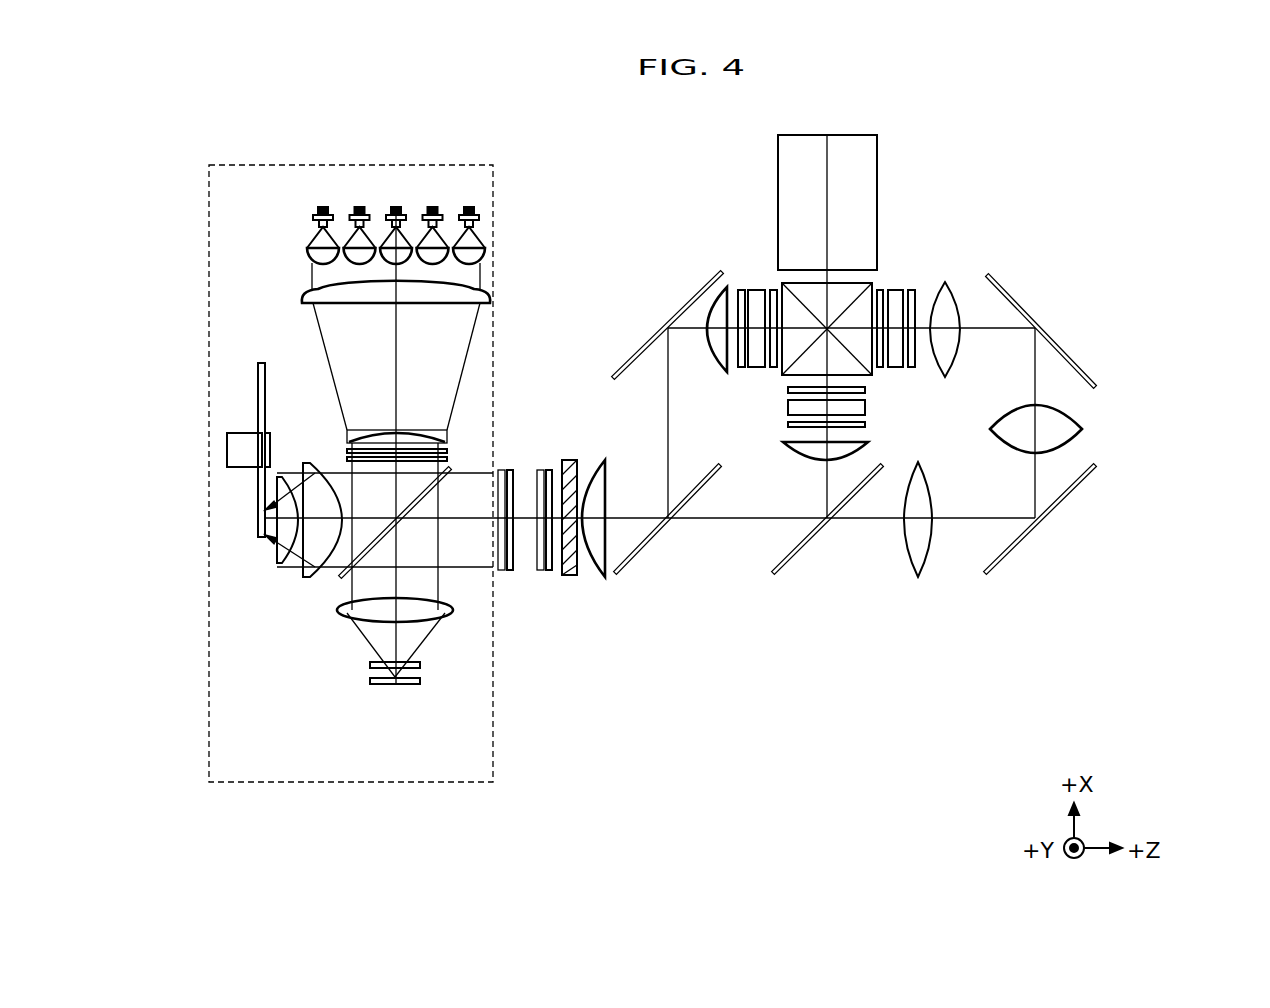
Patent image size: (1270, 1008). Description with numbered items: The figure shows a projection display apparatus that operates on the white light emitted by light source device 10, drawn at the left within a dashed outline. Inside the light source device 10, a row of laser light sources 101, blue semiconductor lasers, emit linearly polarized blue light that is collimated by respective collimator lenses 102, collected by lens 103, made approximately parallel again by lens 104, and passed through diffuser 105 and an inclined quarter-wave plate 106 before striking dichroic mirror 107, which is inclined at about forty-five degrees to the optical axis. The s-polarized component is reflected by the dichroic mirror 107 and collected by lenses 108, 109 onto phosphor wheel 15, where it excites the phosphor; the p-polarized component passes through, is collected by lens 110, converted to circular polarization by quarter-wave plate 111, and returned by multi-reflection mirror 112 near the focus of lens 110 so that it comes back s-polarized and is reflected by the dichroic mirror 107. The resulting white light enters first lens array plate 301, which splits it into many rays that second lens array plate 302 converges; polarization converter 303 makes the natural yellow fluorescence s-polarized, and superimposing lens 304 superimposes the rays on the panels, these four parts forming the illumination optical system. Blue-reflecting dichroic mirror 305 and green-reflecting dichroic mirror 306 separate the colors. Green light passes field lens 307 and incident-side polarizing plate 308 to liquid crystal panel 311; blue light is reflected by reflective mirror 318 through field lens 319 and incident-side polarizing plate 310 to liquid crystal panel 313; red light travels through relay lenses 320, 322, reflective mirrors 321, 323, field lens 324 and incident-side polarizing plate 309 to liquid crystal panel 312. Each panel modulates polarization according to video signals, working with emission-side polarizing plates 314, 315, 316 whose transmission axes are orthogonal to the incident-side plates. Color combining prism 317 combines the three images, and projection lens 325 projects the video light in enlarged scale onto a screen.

The light source device 10 is at (498, 166).
The phosphor wheel 15 is at (260, 365).
The laser light sources 101 is at (478, 218).
The collimator lenses 102 is at (481, 252).
The lens 103 is at (491, 302).
The lens 104 is at (446, 435).
The diffuser 105 is at (444, 450).
The quarter-wave plate 106 is at (444, 460).
The dichroic mirror 107 is at (451, 468).
The lens 108 is at (308, 578).
The lens 109 is at (282, 561).
The lens 110 is at (448, 618).
The quarter-wave plate 111 is at (418, 664).
The multi-reflection mirror 112 is at (378, 688).
The first lens array plate 301 is at (506, 470).
The second lens array plate 302 is at (542, 572).
The polarization converter 303 is at (568, 575).
The superimposing lens 304 is at (605, 578).
The blue-reflecting dichroic mirror 305 is at (636, 562).
The green-reflecting dichroic mirror 306 is at (784, 574).
The field lens 307 is at (793, 458).
The incident-side polarizing plate 308 is at (788, 426).
The incident-side polarizing plate 309 is at (915, 368).
The incident-side polarizing plate 310 is at (734, 368).
The liquid crystal panel 311 is at (788, 410).
The liquid crystal panel 312 is at (900, 368).
The liquid crystal panel 313 is at (755, 289).
The emission-side polarizing plate 314 is at (788, 391).
The emission-side polarizing plate 315 is at (878, 368).
The emission-side polarizing plate 316 is at (773, 289).
The color combining prism 317 is at (866, 291).
The reflective mirror 318 is at (667, 322).
The field lens 319 is at (716, 273).
The relay lens 320 is at (924, 573).
The reflective mirror 321 is at (1033, 533).
The relay lens 322 is at (1083, 437).
The reflective mirror 323 is at (1049, 333).
The field lens 324 is at (946, 283).
The projection lens 325 is at (877, 167).